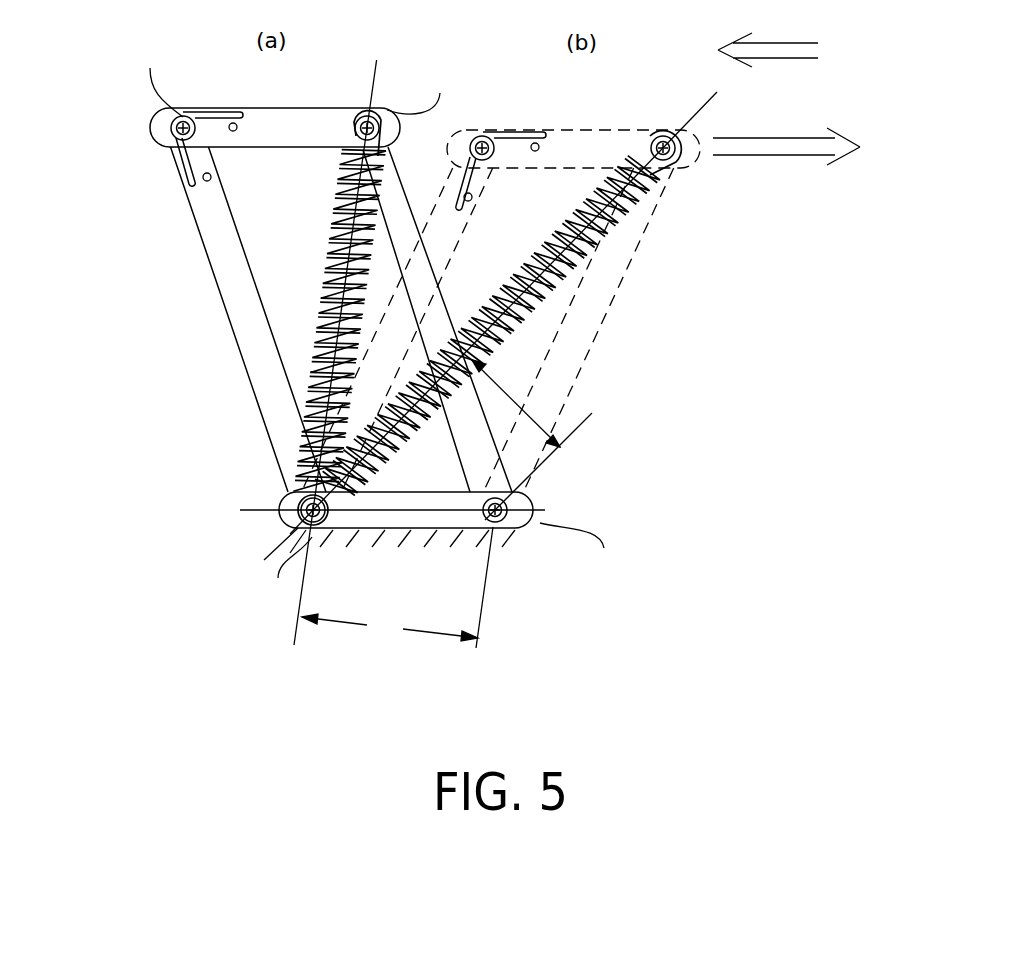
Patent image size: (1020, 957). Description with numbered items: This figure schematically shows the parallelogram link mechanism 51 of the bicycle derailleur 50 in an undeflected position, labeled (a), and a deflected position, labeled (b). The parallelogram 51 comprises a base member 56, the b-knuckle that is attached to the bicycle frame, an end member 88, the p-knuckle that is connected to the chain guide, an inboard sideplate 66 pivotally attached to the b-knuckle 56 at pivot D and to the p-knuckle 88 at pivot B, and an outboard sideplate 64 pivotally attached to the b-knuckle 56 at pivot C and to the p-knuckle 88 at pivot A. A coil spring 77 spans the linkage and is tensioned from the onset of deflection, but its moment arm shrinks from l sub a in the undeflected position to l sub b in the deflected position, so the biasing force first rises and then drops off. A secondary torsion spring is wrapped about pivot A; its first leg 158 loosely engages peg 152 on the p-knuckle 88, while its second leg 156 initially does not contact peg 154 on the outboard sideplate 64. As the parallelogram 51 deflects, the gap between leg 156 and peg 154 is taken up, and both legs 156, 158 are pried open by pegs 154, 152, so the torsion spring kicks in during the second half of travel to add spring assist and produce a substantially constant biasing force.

The bicycle derailleur 50 is at (162, 122).
The parallelogram link mechanism 51 is at (207, 382).
The base member 56 is at (417, 527).
The outboard sideplate 64 is at (233, 290).
The inboard sideplate 66 is at (482, 466).
The coil spring 77 is at (336, 250).
The end member 88 is at (307, 112).
The peg 152 is at (237, 130).
The peg 154 is at (212, 177).
The second leg 156 is at (185, 162).
The first leg 158 is at (215, 113).